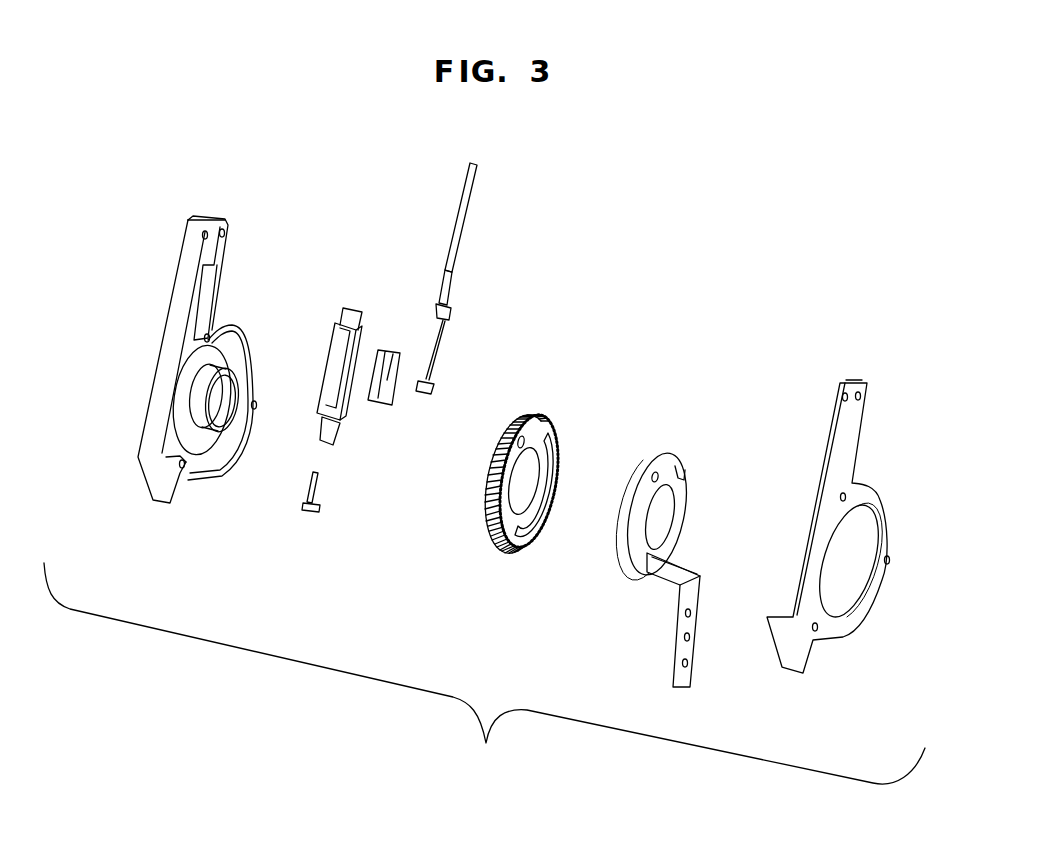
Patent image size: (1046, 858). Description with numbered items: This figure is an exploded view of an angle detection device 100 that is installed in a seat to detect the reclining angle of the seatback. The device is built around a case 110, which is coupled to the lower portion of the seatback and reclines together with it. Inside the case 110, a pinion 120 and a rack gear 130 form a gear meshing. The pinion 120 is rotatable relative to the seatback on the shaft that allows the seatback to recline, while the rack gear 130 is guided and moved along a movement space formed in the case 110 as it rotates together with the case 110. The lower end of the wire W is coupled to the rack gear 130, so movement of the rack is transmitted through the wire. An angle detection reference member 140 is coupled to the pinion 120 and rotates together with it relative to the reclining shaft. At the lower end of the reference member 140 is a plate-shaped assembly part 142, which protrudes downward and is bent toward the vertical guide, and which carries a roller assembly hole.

The angle detection device 100 is at (484, 677).
The case 110 is at (175, 330).
The pinion 120 is at (555, 430).
The rack gear 130 is at (335, 345).
The angle detection reference member 140 is at (685, 515).
The assembly part 142 is at (685, 627).
The wire W is at (452, 255).